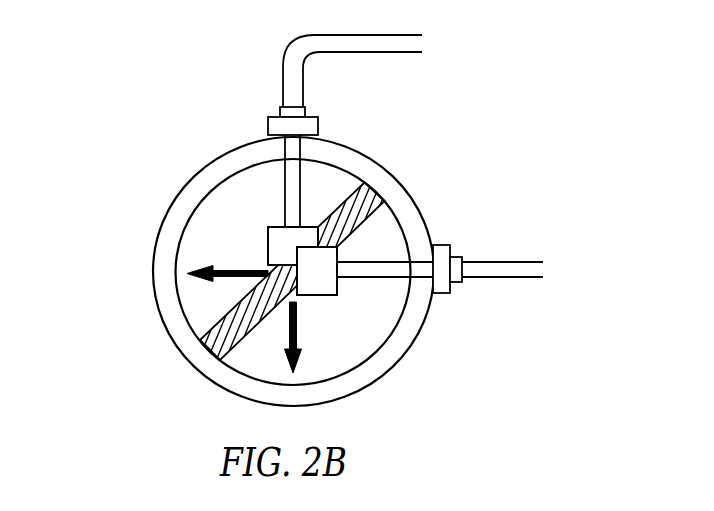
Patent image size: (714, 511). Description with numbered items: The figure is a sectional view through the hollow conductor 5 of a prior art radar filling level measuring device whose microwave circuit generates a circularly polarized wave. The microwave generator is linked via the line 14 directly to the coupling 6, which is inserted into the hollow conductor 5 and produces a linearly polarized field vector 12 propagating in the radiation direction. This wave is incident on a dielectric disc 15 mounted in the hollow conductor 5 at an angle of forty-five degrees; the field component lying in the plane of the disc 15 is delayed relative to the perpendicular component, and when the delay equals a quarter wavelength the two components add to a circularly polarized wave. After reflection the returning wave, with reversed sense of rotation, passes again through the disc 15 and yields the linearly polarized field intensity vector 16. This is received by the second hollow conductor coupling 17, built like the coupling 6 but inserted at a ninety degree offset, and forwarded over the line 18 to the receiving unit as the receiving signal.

The hollow conductor 5 is at (177, 207).
The coupling 6 is at (255, 118).
The linearly polarized field vector 12 is at (299, 324).
The line 14 is at (373, 40).
The dielectric disc 15 is at (210, 345).
The linearly polarized field intensity vector 16 is at (236, 262).
The second hollow conductor coupling 17 is at (448, 232).
The line 18 is at (518, 265).